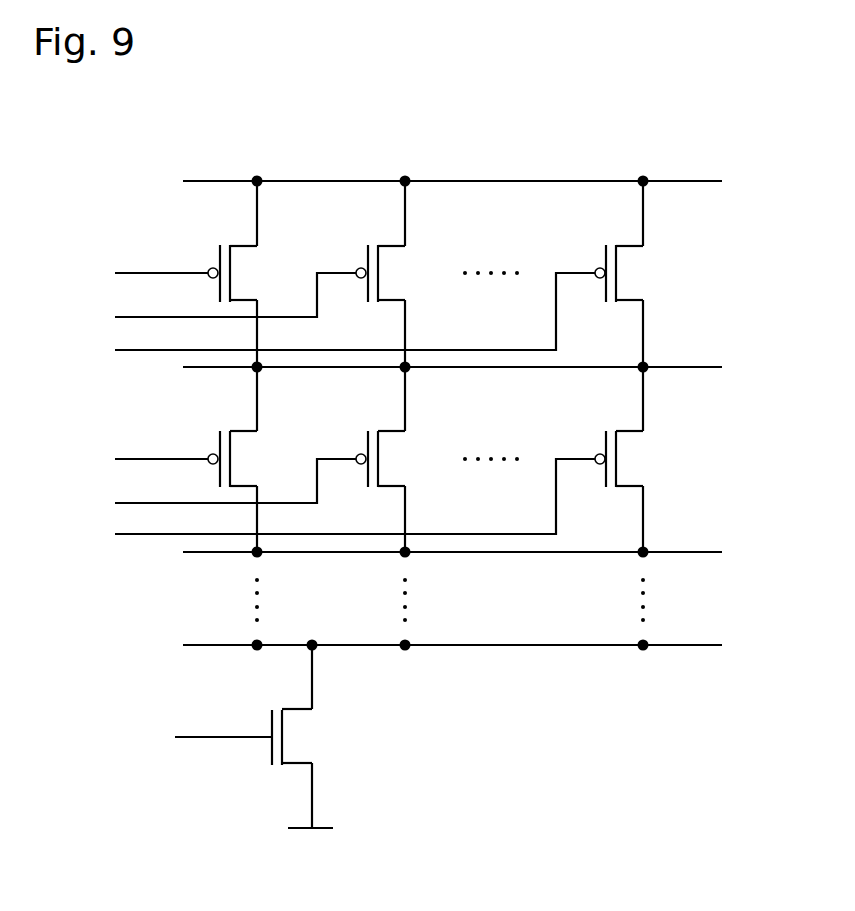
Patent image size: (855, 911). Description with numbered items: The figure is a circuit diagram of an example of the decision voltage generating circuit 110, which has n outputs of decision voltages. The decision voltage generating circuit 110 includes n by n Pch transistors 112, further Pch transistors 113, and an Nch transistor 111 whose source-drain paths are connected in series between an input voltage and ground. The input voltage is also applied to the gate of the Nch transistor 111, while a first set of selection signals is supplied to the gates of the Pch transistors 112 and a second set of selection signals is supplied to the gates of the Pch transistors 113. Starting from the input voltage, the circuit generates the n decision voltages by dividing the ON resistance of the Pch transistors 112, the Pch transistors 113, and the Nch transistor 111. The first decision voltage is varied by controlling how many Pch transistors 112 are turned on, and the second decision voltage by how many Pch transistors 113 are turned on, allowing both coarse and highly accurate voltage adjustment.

The decision voltage generating circuit 110 is at (737, 896).
The Nch transistor 111 is at (310, 737).
The Pch transistors 112 is at (257, 268).
The Pch transistors 113 is at (257, 452).